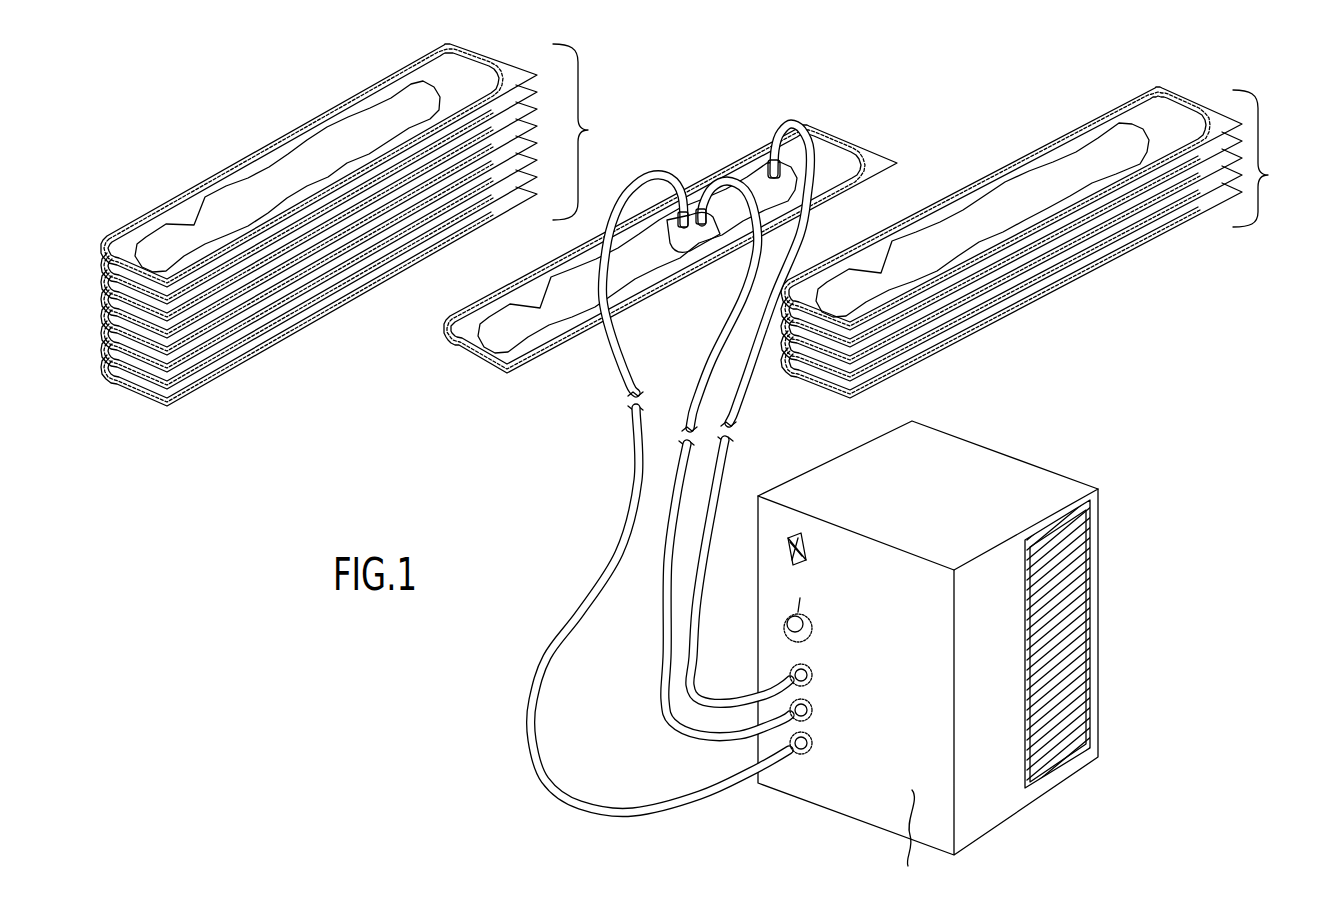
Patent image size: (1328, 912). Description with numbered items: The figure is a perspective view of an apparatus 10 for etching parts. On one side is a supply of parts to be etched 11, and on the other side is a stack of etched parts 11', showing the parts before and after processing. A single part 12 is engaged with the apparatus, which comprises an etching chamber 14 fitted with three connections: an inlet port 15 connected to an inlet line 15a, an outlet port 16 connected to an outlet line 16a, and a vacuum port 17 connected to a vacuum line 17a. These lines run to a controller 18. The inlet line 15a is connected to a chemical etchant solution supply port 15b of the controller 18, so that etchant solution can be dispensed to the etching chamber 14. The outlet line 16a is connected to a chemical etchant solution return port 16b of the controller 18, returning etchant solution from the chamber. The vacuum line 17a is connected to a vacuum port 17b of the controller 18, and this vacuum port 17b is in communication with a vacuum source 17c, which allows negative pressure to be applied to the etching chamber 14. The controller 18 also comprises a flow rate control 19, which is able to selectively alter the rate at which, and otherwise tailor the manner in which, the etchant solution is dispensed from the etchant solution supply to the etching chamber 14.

The apparatus for etching parts 10 is at (555, 479).
The supply of parts to be etched 11 is at (1043, 242).
The stack of etched parts 11' is at (365, 225).
The part 12 is at (848, 137).
The etching chamber 14 is at (753, 178).
The inlet port 15 is at (717, 236).
The inlet line 15a is at (700, 395).
The chemical etchant solution supply port 15b is at (788, 716).
The outlet port 16 is at (773, 170).
The outlet line 16a is at (746, 365).
The chemical etchant solution return port 16b is at (789, 672).
The vacuum port 17 is at (677, 220).
The vacuum line 17a is at (618, 350).
The vacuum port of controller 17b is at (800, 756).
The vacuum source 17c is at (910, 841).
The controller 18 is at (965, 460).
The flow rate control 19 is at (784, 624).